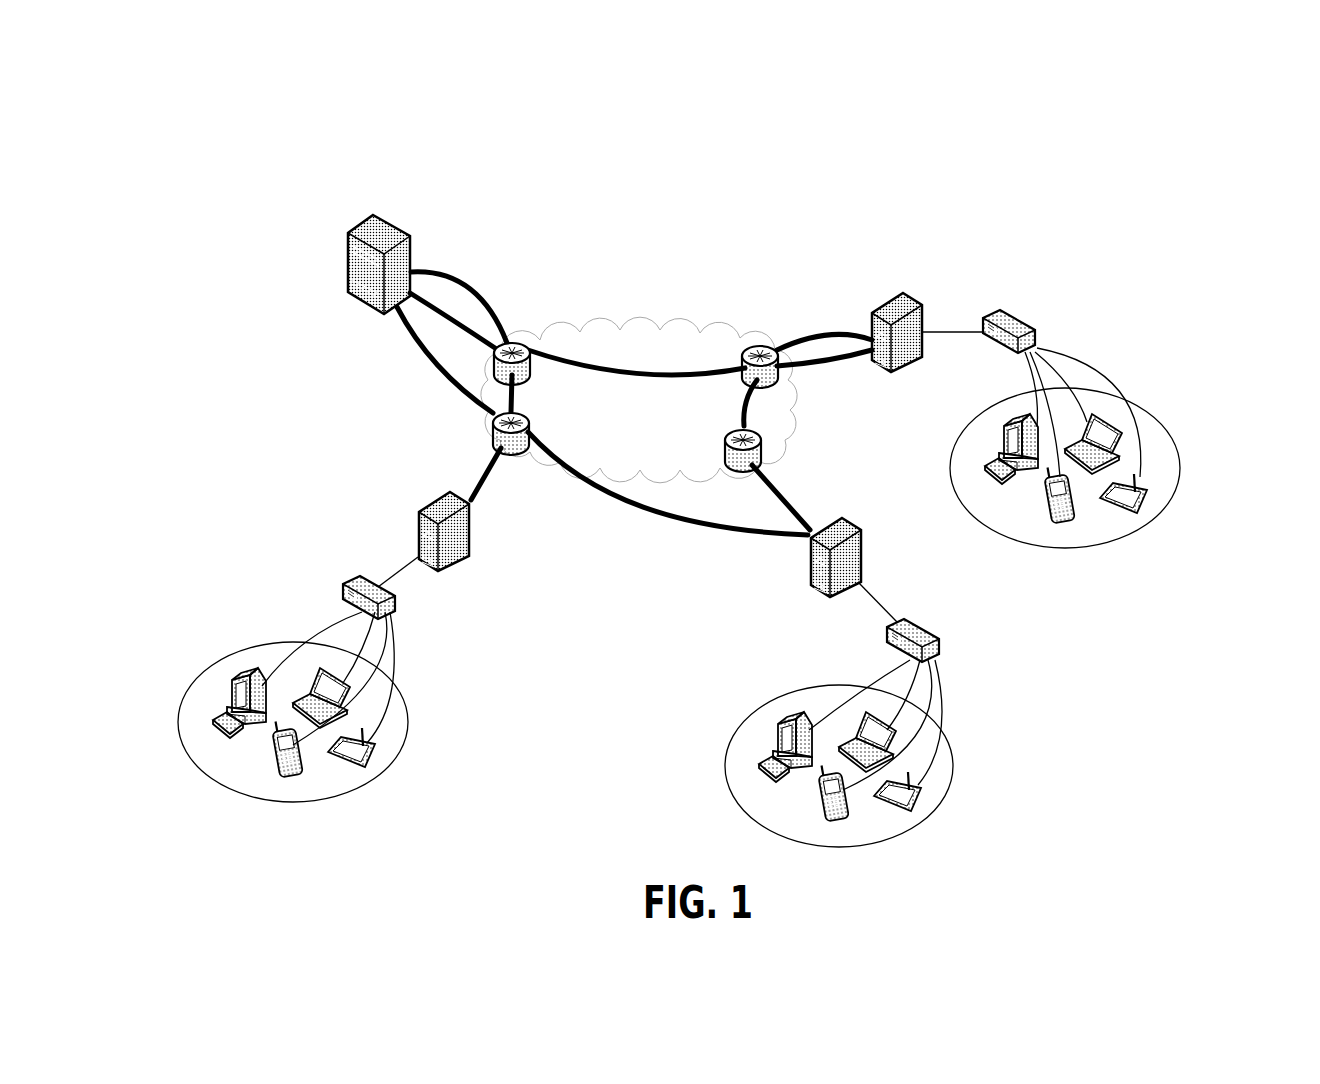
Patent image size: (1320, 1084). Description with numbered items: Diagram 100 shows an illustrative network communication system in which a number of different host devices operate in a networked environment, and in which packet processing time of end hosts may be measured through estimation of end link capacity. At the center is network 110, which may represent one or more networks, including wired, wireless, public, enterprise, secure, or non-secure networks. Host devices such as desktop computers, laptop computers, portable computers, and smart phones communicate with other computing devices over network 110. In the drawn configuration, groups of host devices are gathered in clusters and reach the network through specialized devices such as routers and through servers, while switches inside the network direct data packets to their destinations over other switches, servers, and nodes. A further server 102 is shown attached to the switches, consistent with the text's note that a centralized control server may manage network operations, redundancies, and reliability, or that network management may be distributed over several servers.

The diagram 100 is at (1145, 158).
The server 102 is at (358, 209).
The network 110 is at (656, 414).